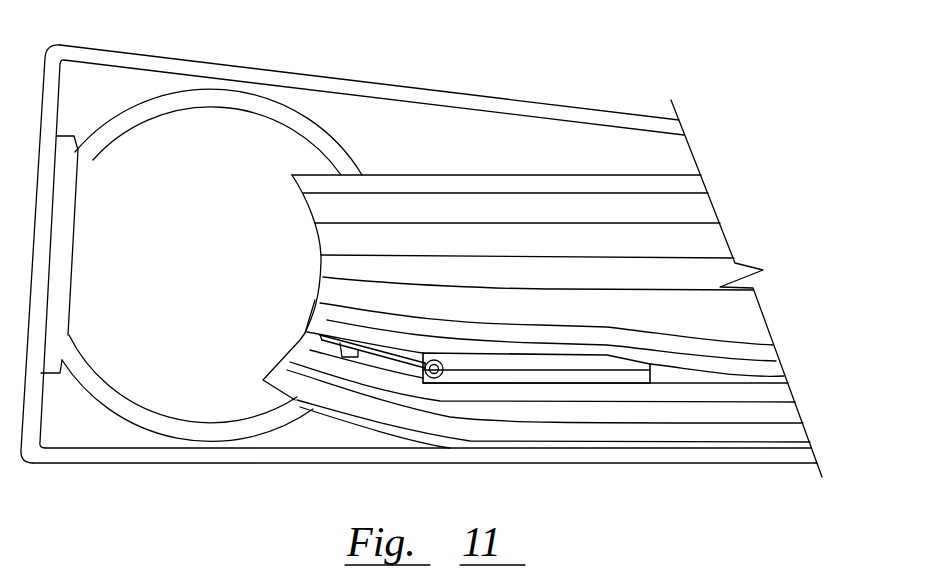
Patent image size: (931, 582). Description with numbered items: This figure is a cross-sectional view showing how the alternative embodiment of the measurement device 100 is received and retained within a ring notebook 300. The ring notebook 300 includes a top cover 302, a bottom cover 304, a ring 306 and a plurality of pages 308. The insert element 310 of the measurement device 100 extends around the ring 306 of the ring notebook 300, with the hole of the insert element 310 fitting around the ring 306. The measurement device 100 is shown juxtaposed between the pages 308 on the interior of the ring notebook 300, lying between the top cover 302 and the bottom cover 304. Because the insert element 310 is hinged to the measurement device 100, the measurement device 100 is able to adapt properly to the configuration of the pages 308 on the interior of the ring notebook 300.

The measurement device 100 is at (530, 305).
The ring notebook 300 is at (421, 279).
The top cover 302 is at (462, 94).
The bottom cover 304 is at (518, 462).
The ring 306 is at (258, 95).
The pages 308 is at (798, 410).
The insert element 310 is at (403, 364).